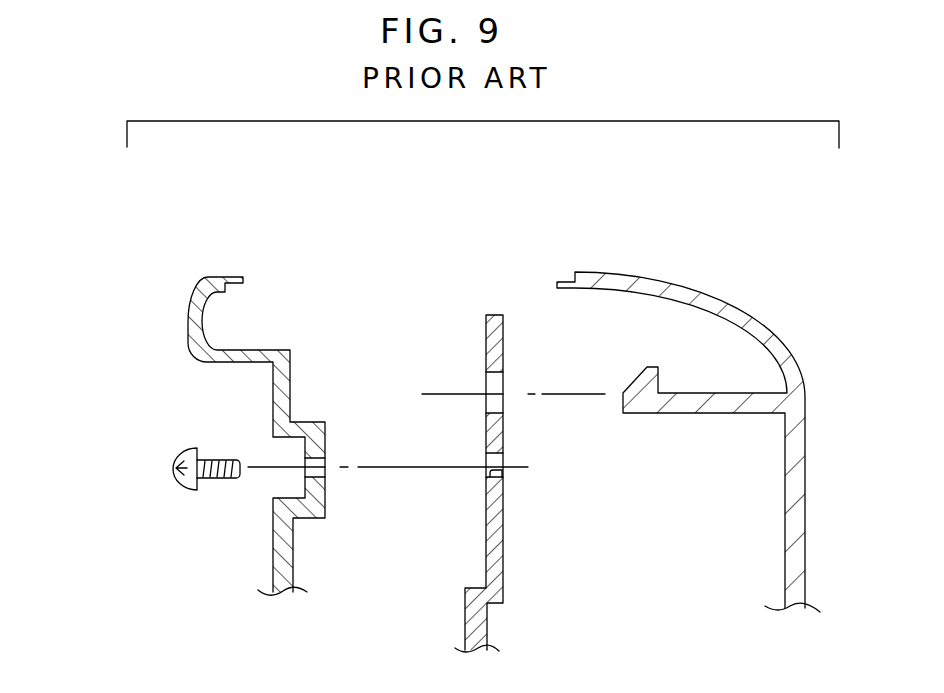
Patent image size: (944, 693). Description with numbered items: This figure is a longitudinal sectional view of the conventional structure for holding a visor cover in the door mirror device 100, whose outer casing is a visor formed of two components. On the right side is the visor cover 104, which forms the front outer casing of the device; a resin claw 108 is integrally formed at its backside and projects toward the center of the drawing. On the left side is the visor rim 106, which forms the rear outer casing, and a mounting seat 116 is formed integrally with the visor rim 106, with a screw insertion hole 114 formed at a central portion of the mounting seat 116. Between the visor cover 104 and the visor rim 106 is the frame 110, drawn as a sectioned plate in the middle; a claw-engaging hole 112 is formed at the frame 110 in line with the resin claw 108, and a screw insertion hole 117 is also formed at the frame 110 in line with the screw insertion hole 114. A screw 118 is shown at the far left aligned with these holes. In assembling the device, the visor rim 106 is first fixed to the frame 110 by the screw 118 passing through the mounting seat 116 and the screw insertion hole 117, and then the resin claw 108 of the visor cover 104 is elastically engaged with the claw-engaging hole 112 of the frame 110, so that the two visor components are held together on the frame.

The door mirror device 100 is at (697, 191).
The visor cover 104 is at (779, 328).
The visor rim 106 is at (186, 340).
The resin claw 108 is at (717, 403).
The frame 110 is at (498, 542).
The claw-engaging hole 112 is at (494, 404).
The screw insertion hole 114 is at (318, 475).
The mounting seat 116 is at (317, 508).
The screw insertion hole 117 is at (503, 473).
The screw 118 is at (175, 488).